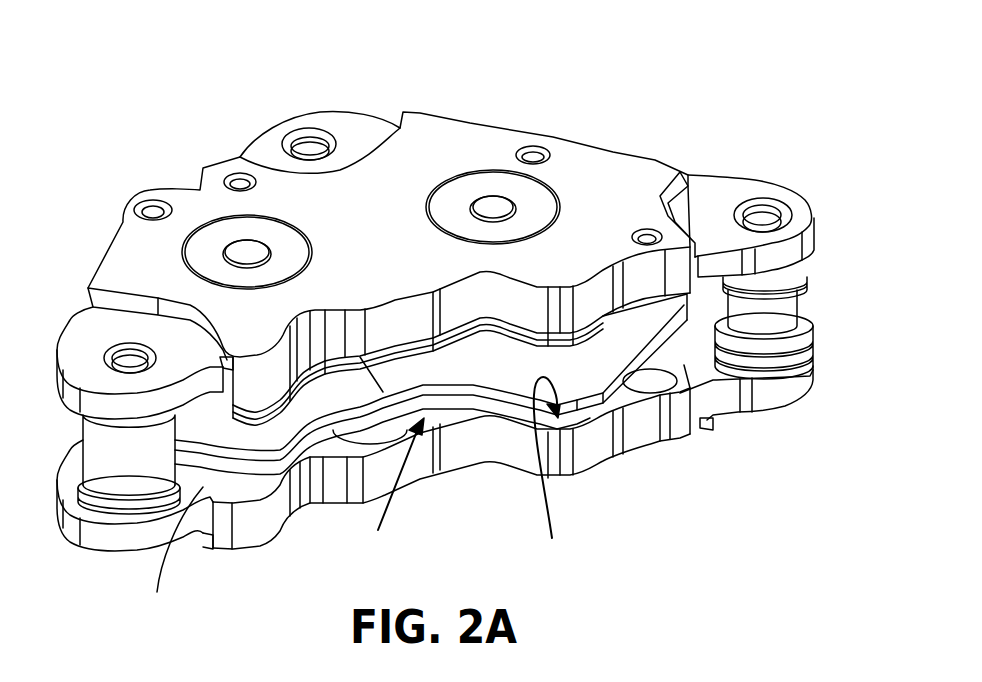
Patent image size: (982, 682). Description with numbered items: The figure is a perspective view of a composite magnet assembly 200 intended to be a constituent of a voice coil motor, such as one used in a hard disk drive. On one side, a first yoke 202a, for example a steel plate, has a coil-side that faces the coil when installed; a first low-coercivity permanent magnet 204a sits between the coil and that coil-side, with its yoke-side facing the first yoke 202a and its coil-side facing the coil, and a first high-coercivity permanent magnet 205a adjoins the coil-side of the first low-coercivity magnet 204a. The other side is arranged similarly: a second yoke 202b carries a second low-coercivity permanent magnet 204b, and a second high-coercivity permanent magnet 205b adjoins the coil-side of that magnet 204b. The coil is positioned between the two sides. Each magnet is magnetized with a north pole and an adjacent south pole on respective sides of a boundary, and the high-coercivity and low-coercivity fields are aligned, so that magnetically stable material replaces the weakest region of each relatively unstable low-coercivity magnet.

The composite magnet assembly 200 is at (248, 58).
The first yoke 202a is at (700, 420).
The second yoke 202b is at (635, 174).
The first low-coercivity permanent magnet 204a is at (590, 407).
The second low-coercivity permanent magnet 204b is at (503, 327).
The first high-coercivity permanent magnet 205a is at (507, 400).
The second high-coercivity permanent magnet 205b is at (733, 313).